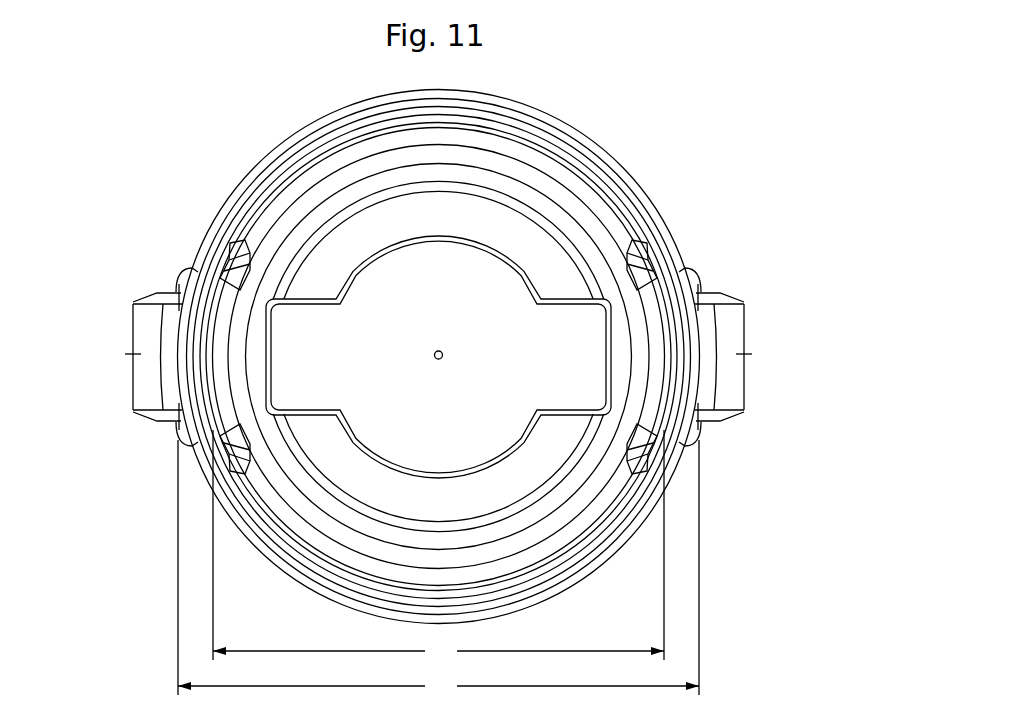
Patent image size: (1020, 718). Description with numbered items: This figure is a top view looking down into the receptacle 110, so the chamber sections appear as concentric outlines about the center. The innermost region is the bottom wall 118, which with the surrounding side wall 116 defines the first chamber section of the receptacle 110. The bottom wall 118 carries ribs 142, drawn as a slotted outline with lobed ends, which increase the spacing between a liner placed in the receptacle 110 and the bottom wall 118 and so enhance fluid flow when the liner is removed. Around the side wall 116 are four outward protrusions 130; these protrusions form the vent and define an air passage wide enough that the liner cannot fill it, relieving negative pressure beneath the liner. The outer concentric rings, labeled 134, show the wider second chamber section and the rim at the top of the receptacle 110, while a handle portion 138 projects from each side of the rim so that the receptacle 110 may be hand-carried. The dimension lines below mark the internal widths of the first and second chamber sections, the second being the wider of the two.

The receptacle 110 is at (688, 115).
The outer annular rim 134 is at (572, 128).
The side wall 116 is at (624, 210).
The ribs 142 is at (472, 242).
The bottom wall 118 is at (452, 323).
The outward protrusions 130 is at (247, 273).
The handle portion 138 is at (132, 352).